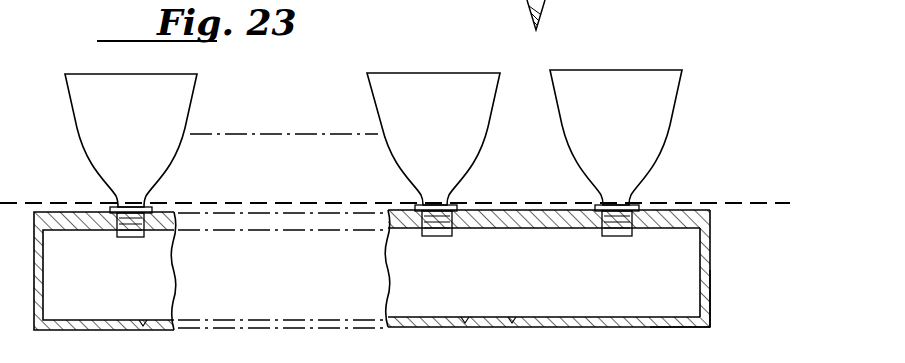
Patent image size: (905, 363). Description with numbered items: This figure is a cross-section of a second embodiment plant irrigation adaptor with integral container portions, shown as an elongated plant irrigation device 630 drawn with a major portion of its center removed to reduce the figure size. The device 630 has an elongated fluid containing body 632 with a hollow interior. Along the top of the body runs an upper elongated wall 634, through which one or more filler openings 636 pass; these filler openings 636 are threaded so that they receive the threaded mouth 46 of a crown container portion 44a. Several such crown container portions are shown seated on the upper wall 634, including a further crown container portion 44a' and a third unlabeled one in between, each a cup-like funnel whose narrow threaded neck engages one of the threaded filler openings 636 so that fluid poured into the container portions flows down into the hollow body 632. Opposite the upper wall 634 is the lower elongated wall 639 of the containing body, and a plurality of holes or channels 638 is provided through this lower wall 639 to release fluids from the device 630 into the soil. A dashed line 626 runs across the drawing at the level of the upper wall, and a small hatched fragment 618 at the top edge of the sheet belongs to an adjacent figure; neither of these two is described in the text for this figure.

The crown container portion 44a' is at (165, 140).
The crown container portion 44a is at (651, 137).
The threaded mouth 46 is at (610, 238).
The wedge member 618 is at (538, 28).
The reference plane line 626 is at (735, 202).
The plant irrigation device 630 is at (713, 222).
The fluid containing body 632 is at (713, 297).
The upper elongated wall 634 is at (78, 222).
The filler opening 636 is at (637, 235).
The holes or channels 638 is at (512, 318).
The lower elongated wall 639 is at (582, 317).